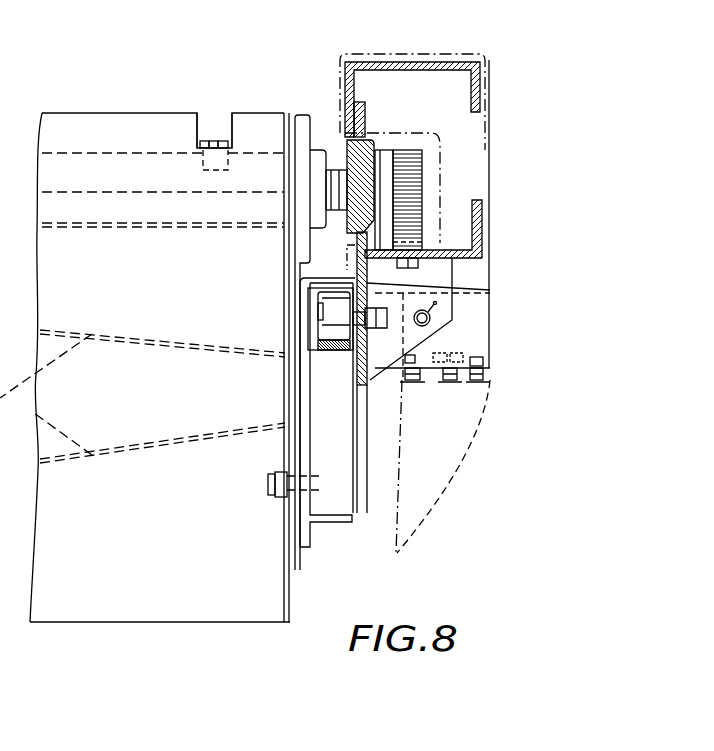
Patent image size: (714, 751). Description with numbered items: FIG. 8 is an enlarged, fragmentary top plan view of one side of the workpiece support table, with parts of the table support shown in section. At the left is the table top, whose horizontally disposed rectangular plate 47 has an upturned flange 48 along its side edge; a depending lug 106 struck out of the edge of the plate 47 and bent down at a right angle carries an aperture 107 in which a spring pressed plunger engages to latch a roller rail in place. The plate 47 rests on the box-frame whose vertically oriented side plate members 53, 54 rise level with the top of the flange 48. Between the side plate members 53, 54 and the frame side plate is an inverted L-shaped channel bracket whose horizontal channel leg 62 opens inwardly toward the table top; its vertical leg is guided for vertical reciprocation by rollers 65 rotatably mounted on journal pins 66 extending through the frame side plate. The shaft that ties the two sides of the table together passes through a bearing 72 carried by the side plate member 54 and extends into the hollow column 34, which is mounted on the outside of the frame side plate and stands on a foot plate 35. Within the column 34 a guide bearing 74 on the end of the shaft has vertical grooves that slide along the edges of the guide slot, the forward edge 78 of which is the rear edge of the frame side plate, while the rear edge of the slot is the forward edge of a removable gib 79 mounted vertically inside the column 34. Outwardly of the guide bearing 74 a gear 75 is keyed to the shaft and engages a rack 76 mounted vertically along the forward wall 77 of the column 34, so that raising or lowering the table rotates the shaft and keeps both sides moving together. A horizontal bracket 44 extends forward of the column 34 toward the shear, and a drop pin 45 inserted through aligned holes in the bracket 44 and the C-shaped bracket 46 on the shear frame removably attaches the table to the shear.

The hollow column 34 is at (484, 88).
The foot plate 35 is at (490, 101).
The horizontal bracket 44 is at (380, 363).
The drop pin 45 is at (437, 318).
The C-shaped bracket 46 is at (492, 368).
The rectangular plate 47 is at (168, 558).
The upturned flange 48 is at (294, 603).
The side plate member 53 is at (490, 290).
The side plate member 54 is at (302, 114).
The horizontal channel leg 62 is at (335, 523).
The roller 65 is at (328, 303).
The journal pin 66 is at (430, 336).
The bearing 72 is at (311, 120).
The guide bearing 74 is at (380, 148).
The gear 75 is at (422, 177).
The rack 76 is at (483, 238).
The forward wall 77 is at (485, 259).
The forward edge of slot 78 is at (382, 222).
The gib 79 is at (366, 117).
The depending lug 106 is at (207, 140).
The aperture 107 is at (213, 137).